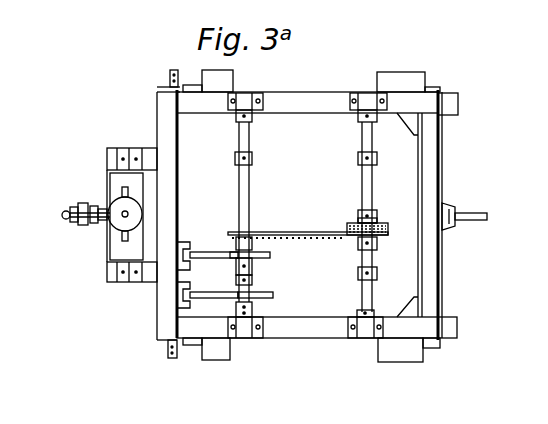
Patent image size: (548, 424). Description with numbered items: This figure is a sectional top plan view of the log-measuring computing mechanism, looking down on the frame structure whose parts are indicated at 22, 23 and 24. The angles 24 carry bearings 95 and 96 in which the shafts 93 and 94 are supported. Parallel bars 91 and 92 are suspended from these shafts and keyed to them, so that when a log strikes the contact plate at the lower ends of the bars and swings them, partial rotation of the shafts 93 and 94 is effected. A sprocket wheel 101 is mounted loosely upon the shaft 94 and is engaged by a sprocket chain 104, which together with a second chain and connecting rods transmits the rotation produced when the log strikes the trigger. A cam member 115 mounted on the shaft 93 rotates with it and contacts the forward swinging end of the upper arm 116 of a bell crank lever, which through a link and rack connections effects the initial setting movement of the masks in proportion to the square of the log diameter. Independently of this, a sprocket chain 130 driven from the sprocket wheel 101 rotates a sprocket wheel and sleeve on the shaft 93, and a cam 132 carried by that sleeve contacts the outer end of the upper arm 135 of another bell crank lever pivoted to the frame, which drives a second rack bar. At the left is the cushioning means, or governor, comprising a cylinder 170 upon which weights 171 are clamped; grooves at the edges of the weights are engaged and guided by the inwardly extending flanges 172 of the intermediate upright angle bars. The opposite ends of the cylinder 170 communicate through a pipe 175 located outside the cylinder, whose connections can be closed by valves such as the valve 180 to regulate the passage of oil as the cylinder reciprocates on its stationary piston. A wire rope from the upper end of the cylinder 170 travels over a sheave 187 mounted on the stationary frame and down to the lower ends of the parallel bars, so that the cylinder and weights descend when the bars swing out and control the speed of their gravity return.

The frame structure part 22 is at (222, 360).
The frame structure part 23 is at (415, 362).
The angle of the frame structure 24 is at (313, 92).
The parallel bar 91 is at (255, 266).
The parallel bar 92 is at (360, 258).
The shaft 93 is at (251, 180).
The shaft 94 is at (360, 131).
The bearing 95 is at (250, 92).
The bearing 96 is at (362, 92).
The sprocket wheel 101 is at (374, 232).
The sprocket chain 104 is at (347, 228).
The cam member 115 is at (273, 296).
The upper arm of bell crank lever 116 is at (210, 292).
The sprocket chain 130 is at (268, 232).
The cam 132 is at (271, 255).
The upper arm of bell crank lever 135 is at (205, 251).
The cylinder 170 is at (116, 200).
The weights 171 is at (110, 248).
The inwardly extending flanges 172 is at (110, 165).
The pipe 175 is at (63, 211).
The valve 180 is at (80, 223).
The sheave 187 is at (483, 215).